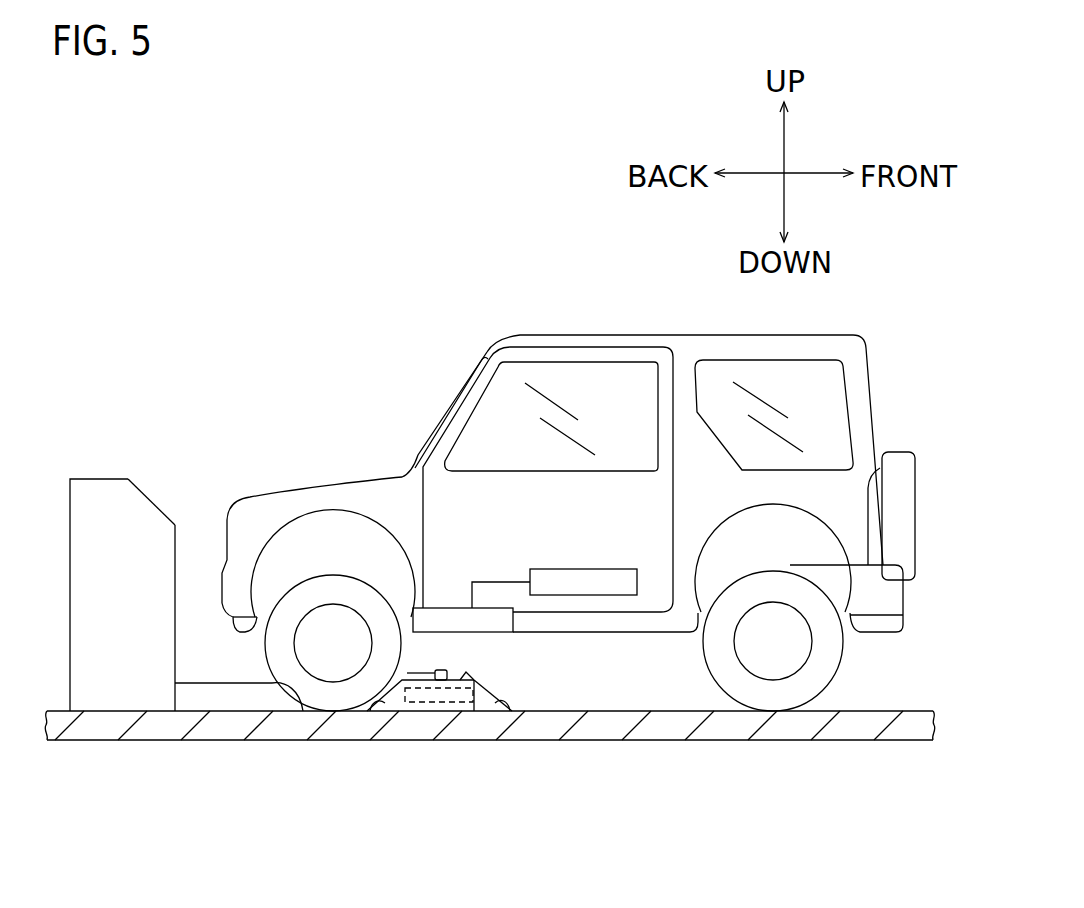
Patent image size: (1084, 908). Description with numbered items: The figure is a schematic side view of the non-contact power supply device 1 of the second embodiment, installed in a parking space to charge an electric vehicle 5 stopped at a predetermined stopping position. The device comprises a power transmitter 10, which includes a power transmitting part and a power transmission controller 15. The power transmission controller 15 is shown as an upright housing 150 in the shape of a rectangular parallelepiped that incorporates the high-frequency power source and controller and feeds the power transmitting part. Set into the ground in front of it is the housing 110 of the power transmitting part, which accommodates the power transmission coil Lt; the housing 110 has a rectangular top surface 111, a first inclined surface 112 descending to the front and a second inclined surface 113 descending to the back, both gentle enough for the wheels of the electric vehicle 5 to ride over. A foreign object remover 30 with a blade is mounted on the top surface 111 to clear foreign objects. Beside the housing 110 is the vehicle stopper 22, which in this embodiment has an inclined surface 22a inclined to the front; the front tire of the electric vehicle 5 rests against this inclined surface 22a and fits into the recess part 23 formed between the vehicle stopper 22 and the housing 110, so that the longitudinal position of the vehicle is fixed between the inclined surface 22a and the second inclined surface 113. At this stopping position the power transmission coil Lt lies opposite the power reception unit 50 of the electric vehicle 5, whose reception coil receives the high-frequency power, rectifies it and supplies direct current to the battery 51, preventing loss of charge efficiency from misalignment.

The non-contact power supply device 1 is at (160, 350).
The electric vehicle 5 is at (568, 484).
The power transmitter 10 is at (467, 761).
The power transmission controller 15 is at (159, 496).
The vehicle stopper 22 is at (220, 696).
The inclined surface 22a is at (295, 708).
The recess part 23 is at (298, 718).
The foreign object remover 30 is at (468, 659).
The power reception unit 50 is at (440, 597).
The battery 51 is at (592, 583).
The housing 110 is at (445, 783).
The top surface 111 is at (474, 711).
The first inclined surface 112 is at (512, 758).
The second inclined surface 113 is at (367, 711).
The housing 150 is at (131, 554).
The power transmission coil Lt is at (437, 695).